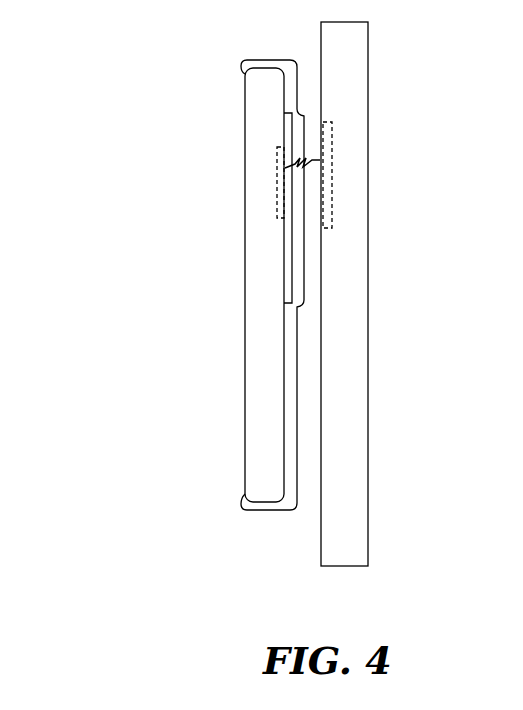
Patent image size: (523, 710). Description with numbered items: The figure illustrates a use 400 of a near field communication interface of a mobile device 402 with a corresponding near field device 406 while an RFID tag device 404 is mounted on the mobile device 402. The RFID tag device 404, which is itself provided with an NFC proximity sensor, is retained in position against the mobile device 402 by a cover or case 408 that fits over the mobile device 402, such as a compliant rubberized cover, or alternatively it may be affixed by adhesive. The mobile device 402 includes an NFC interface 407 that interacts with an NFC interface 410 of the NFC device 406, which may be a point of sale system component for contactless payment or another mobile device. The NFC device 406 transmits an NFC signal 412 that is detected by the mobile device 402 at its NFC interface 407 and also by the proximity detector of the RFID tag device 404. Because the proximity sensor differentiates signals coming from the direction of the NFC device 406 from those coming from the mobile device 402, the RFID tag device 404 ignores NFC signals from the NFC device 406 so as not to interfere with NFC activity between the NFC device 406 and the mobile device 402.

The use of a near field communication interface 400 is at (70, 40).
The mobile device 402 is at (245, 127).
The RFID tag device 404 is at (288, 257).
The near field device 406 is at (368, 64).
The NFC interface 407 is at (278, 195).
The cover or case 408 is at (288, 60).
The NFC interface 410 is at (331, 122).
The NFC signal 412 is at (310, 162).